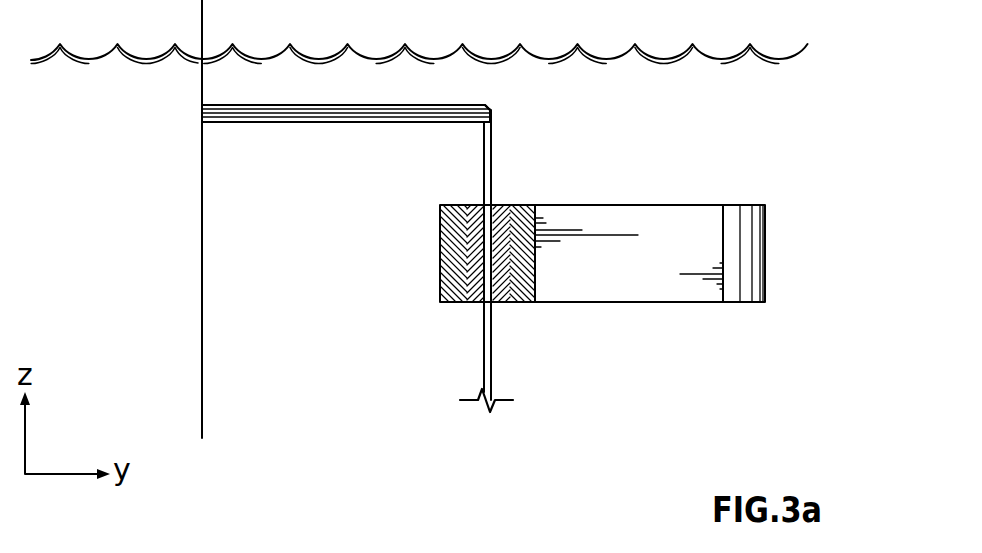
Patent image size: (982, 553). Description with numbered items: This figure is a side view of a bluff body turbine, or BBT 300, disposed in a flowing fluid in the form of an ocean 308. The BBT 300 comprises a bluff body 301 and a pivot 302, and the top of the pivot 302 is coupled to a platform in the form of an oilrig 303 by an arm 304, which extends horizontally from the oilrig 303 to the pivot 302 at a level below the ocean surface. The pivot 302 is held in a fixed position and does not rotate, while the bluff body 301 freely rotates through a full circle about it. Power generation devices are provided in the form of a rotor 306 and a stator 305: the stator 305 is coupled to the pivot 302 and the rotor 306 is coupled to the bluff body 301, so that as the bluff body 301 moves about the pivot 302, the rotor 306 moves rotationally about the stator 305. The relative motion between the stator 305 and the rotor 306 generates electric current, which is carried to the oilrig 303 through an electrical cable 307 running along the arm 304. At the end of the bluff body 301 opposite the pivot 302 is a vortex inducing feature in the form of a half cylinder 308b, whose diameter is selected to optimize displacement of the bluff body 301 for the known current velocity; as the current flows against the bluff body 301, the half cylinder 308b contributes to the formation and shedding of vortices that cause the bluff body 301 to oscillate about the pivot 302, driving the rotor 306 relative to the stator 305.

The bluff body turbine (BBT) 300 is at (655, 243).
The bluff body 301 is at (767, 256).
The pivot 302 is at (493, 142).
The oilrig 303 is at (193, 30).
The arm 304 is at (313, 124).
The stator 305 is at (470, 212).
The rotor 306 is at (523, 302).
The electrical cable 307 is at (476, 105).
The ocean 308 is at (778, 102).
The half cylinder 308b is at (750, 228).